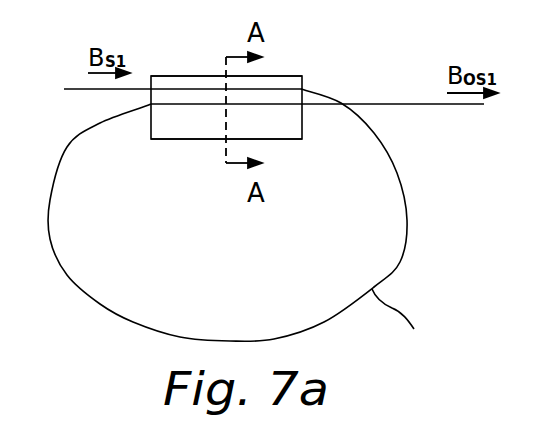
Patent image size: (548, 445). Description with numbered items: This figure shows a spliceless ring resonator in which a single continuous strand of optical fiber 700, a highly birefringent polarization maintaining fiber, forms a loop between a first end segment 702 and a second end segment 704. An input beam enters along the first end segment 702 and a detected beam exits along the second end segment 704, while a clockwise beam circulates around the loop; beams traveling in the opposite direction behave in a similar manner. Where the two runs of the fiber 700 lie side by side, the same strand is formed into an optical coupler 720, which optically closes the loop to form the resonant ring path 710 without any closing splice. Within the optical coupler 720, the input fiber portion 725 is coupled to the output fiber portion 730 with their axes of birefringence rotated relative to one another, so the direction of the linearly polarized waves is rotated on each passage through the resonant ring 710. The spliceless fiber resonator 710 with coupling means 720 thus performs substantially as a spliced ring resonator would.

The optical fiber 700 is at (416, 321).
The first end segment 702 is at (80, 90).
The second end segment 704 is at (424, 105).
The resonant ring path 710 is at (213, 241).
The optical coupler 720 is at (302, 77).
The input fiber portion 725 is at (181, 89).
The output fiber portion 730 is at (273, 105).